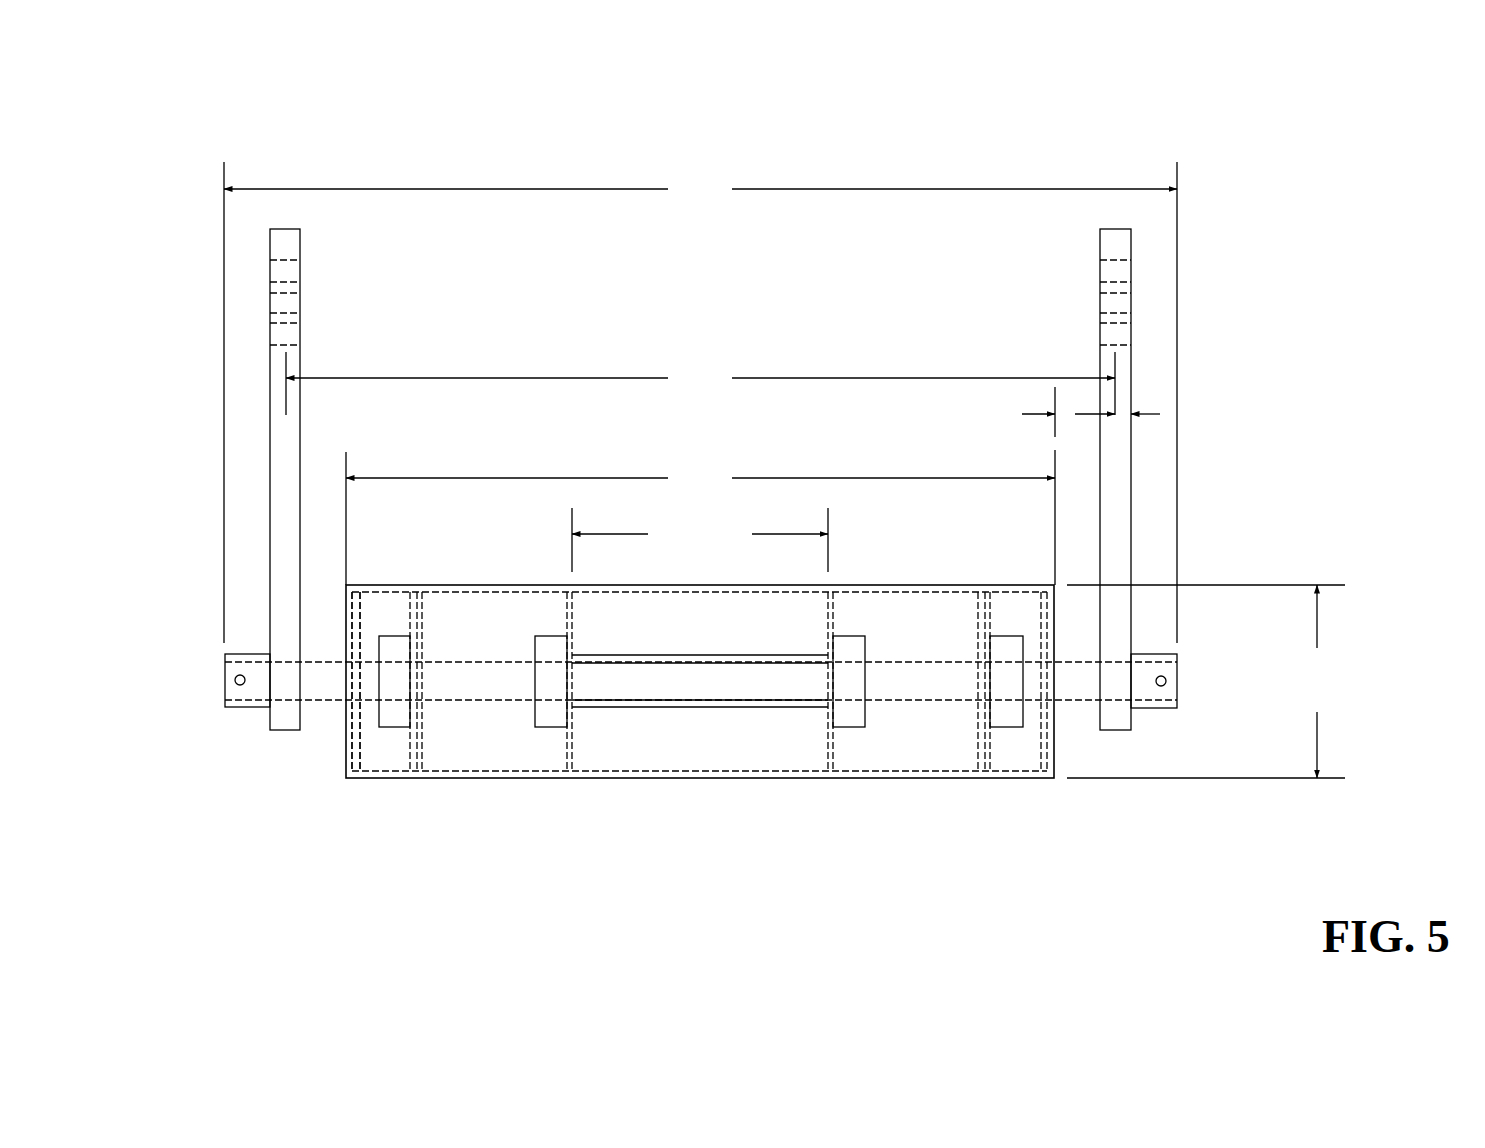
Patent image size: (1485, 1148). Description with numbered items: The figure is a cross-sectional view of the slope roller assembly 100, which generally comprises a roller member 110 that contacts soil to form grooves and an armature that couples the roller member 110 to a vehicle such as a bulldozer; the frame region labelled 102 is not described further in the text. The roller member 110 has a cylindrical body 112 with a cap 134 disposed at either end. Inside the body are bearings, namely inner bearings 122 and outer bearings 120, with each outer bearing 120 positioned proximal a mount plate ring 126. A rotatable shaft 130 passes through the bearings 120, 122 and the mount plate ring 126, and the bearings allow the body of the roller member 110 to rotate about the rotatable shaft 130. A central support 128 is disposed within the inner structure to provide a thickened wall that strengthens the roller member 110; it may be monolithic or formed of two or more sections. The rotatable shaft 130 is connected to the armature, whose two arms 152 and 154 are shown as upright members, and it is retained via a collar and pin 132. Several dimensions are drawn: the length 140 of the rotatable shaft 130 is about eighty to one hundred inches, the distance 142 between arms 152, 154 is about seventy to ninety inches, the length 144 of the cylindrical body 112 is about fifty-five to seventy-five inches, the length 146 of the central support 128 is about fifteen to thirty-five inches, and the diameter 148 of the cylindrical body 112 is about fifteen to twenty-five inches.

The slope roller assembly 100 is at (192, 112).
The frame 102 is at (1163, 278).
The roller member 110 is at (1023, 815).
The cylindrical body 112 is at (1016, 585).
The outer bearing 120 is at (375, 633).
The inner bearing 122 is at (565, 727).
The mount plate ring 126 is at (412, 635).
The central support 128 is at (700, 705).
The rotatable shaft 130 is at (205, 657).
The collar and pin 132 is at (235, 683).
The cap 134 is at (345, 740).
The length of the rotatable shaft 140 is at (422, 183).
The distance between arms 142 is at (655, 360).
The length of the cylindrical body 144 is at (628, 452).
The length of the central support 146 is at (745, 515).
The diameter 148 is at (1352, 678).
The arm 152 is at (273, 438).
The arm 154 is at (1127, 487).